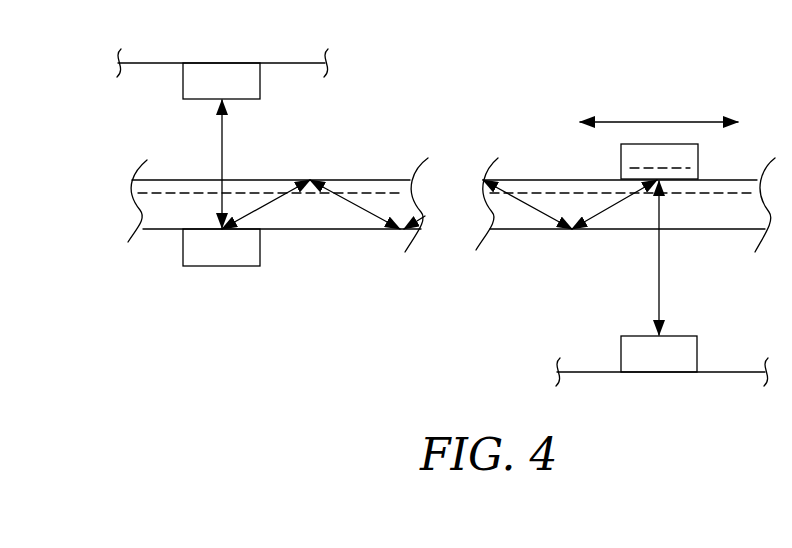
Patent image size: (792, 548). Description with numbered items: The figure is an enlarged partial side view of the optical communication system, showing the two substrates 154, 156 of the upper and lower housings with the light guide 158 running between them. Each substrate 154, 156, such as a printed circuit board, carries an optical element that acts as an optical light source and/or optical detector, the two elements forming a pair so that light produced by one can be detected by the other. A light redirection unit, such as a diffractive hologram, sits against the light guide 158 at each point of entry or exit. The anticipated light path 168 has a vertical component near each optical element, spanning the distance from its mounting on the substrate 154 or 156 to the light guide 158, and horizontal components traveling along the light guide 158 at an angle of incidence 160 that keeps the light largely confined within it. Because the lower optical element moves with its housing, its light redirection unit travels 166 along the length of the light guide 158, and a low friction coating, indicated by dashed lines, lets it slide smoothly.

The substrate 154 is at (296, 58).
The substrate 156 is at (738, 375).
The light guide 158 is at (307, 220).
The angle of incidence 160 is at (369, 217).
The travel 166 is at (659, 118).
The light path 168 is at (538, 204).